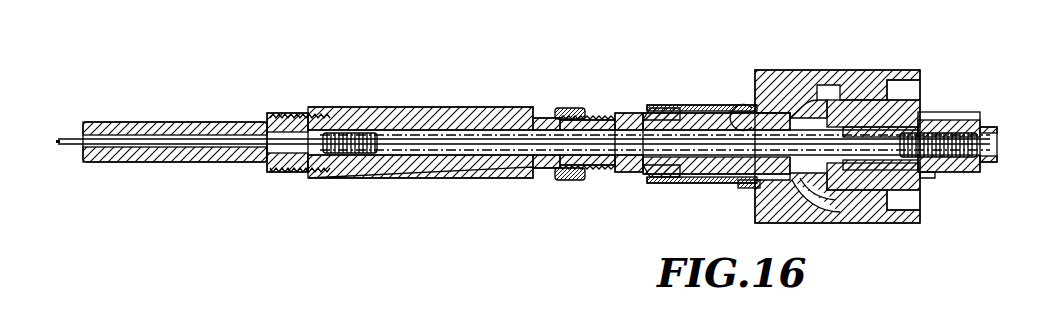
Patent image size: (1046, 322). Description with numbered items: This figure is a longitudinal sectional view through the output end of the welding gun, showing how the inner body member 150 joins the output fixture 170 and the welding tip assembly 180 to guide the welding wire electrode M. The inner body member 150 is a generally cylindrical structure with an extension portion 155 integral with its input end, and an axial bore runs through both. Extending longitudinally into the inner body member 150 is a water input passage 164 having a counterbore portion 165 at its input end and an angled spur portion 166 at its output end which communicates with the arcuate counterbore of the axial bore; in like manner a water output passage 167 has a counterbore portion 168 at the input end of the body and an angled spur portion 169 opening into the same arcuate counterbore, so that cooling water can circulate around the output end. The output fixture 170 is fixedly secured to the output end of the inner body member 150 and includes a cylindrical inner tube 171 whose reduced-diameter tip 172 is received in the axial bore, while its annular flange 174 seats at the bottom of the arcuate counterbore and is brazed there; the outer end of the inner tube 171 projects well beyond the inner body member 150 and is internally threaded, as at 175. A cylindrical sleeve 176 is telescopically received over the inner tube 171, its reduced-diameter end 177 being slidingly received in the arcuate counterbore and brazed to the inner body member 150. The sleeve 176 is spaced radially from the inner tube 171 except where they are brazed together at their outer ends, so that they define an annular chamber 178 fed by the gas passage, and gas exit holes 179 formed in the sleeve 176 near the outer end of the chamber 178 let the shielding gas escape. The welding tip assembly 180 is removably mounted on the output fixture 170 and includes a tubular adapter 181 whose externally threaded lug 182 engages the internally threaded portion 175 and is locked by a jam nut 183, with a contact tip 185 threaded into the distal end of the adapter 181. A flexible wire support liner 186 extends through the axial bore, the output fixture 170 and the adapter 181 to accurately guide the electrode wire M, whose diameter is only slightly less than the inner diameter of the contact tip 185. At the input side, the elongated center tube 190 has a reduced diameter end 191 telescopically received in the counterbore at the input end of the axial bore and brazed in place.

The welding wire electrode M is at (70, 134).
The inner body member 150 is at (828, 134).
The extension portion 155 is at (962, 116).
The water input passage 164 is at (830, 86).
The counterbore portion 165 is at (921, 80).
The angled spur portion 166 is at (803, 117).
The water output passage 167 is at (853, 207).
The counterbore portion 168 is at (913, 208).
The angled spur portion 169 is at (823, 221).
The output fixture 170 is at (663, 70).
The inner tube 171 is at (611, 80).
The reduced-diameter tip 172 is at (753, 218).
The annular flange 174 is at (757, 188).
The internally threaded portion 175 is at (622, 163).
The sleeve 176 is at (711, 68).
The reduced-diameter end 177 is at (731, 110).
The annular chamber 178 is at (667, 176).
The gas exit holes 179 is at (680, 108).
The welding tip assembly 180 is at (375, 82).
The tubular adapter 181 is at (445, 179).
The externally threaded lug 182 is at (540, 169).
The jam nut 183 is at (559, 108).
The contact tip 185 is at (183, 121).
The wire support liner 186 is at (362, 155).
The center tube 190 is at (980, 112).
The reduced diameter end 191 is at (928, 178).